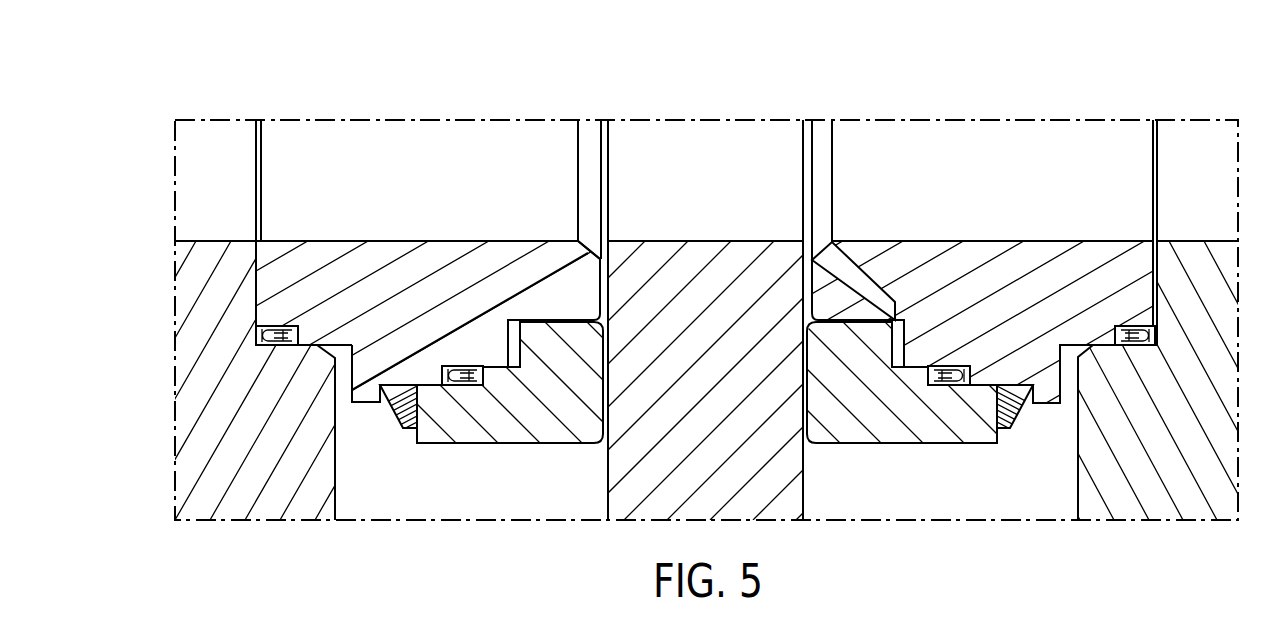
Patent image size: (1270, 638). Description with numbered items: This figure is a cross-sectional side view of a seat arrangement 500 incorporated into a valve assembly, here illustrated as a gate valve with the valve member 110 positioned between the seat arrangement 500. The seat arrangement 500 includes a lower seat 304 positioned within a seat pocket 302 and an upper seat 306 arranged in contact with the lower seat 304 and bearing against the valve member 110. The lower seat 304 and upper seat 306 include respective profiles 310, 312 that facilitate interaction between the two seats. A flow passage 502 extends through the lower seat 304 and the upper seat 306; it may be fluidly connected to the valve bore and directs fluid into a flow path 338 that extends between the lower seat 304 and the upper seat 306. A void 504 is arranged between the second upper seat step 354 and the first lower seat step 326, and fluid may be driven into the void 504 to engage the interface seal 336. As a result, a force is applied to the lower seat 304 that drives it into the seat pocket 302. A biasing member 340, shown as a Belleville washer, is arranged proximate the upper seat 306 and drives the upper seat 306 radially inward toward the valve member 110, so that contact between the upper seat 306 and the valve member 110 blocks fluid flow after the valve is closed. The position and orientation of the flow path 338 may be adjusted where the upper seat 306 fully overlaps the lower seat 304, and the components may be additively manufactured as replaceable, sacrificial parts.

The seat arrangement 500 is at (205, 77).
The valve member 110 is at (747, 282).
The seat pocket 302 is at (252, 330).
The lower seat 304 is at (312, 260).
The upper seat 306 is at (453, 422).
The profile 310 is at (400, 358).
The profile 312 is at (528, 375).
The first lower seat step 326 is at (498, 302).
The interface seal 336 is at (403, 428).
The flow path 338 is at (594, 283).
The biasing member 340 is at (1013, 418).
The second upper seat step 354 is at (502, 383).
The flow passage 502 is at (583, 310).
The void 504 is at (900, 328).